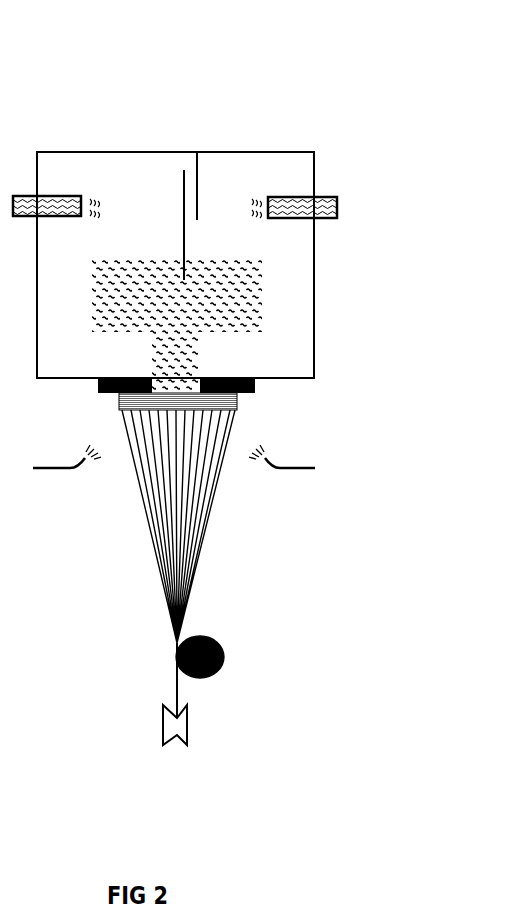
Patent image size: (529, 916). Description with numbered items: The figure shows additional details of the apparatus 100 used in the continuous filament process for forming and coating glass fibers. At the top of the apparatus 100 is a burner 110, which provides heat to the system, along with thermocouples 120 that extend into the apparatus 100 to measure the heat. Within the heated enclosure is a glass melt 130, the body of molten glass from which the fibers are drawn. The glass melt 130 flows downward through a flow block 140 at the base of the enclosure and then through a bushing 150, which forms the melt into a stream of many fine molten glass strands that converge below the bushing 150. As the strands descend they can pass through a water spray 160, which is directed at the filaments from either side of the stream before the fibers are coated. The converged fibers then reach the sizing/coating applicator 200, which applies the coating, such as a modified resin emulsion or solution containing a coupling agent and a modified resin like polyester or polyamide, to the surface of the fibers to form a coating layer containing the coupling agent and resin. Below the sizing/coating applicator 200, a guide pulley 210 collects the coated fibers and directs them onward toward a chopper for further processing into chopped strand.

The apparatus 100 is at (155, 112).
The burner 110 is at (340, 207).
The thermocouples 120 is at (181, 158).
The glass melt 130 is at (273, 298).
The flow block 140 is at (258, 381).
The bushing 150 is at (245, 405).
The water spray 160 is at (300, 478).
The sizing/coating applicator 200 is at (233, 650).
The guide pulley 210 is at (206, 722).